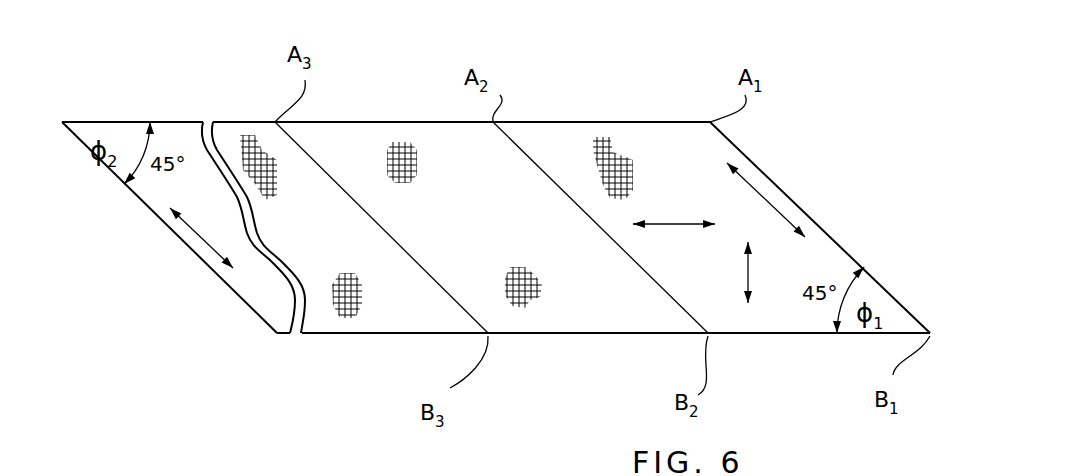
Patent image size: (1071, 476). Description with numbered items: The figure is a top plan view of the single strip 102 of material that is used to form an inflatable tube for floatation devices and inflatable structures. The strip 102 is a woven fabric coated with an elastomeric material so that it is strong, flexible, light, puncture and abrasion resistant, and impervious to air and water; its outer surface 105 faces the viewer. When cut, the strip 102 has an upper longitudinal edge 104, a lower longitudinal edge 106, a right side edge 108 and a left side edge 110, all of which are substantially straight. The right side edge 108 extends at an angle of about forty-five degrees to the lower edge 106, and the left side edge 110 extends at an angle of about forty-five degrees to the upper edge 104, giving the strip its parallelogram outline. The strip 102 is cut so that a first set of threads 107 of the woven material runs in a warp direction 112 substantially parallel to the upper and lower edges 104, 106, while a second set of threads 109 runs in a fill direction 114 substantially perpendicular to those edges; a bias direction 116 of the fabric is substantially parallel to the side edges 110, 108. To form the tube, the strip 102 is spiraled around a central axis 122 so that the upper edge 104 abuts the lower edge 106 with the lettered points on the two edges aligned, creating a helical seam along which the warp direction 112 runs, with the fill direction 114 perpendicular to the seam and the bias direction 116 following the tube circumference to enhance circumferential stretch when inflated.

The strip 102 is at (496, 225).
The upper longitudinal edge 104 is at (167, 122).
The outer surface 105 is at (491, 227).
The lower longitudinal edge 106 is at (287, 336).
The first set of threads 107 is at (630, 163).
The right side edge 108 is at (823, 225).
The second set of threads 109 is at (413, 190).
The left side edge 110 is at (178, 240).
The warp direction 112 is at (670, 222).
The fill direction 114 is at (748, 272).
The bias direction 116 is at (205, 240).
The central axis 122 is at (269, 463).